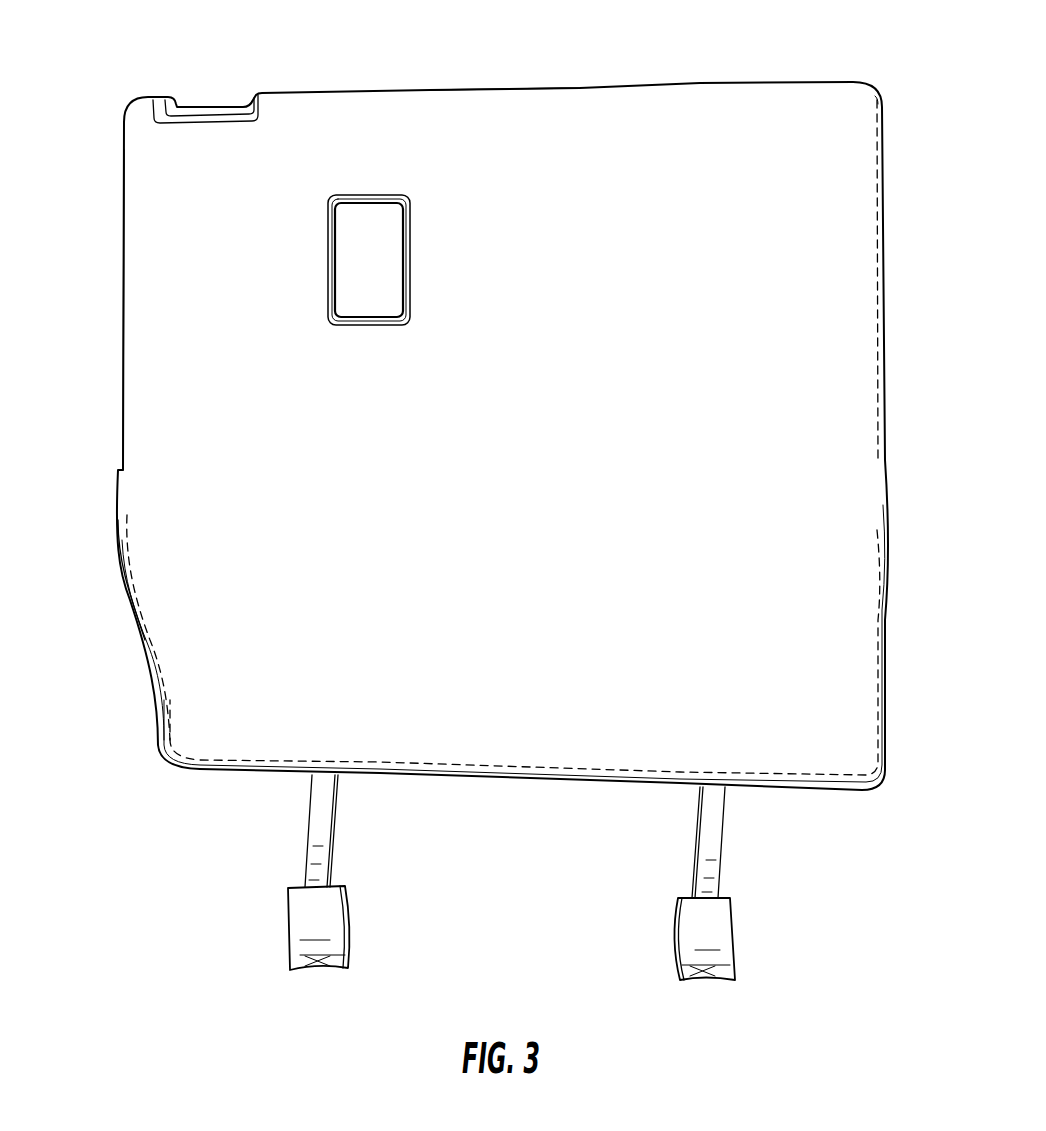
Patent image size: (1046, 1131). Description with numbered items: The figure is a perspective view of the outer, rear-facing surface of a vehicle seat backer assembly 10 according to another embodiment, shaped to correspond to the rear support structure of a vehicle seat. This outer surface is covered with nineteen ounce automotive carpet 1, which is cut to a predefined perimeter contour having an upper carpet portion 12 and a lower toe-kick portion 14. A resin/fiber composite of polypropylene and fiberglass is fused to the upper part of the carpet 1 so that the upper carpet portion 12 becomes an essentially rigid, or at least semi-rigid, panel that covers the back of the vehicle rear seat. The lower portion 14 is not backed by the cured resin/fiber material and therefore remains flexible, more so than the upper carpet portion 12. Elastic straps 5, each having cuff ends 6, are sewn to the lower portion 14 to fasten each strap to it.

The vehicle seat backer assembly 10 is at (775, 84).
The automotive carpet 1 is at (487, 110).
The upper carpet portion 12 is at (165, 243).
The lower toe-kick portion 14 is at (195, 697).
The elastic straps 5 is at (330, 825).
The cuff ends 6 is at (348, 896).